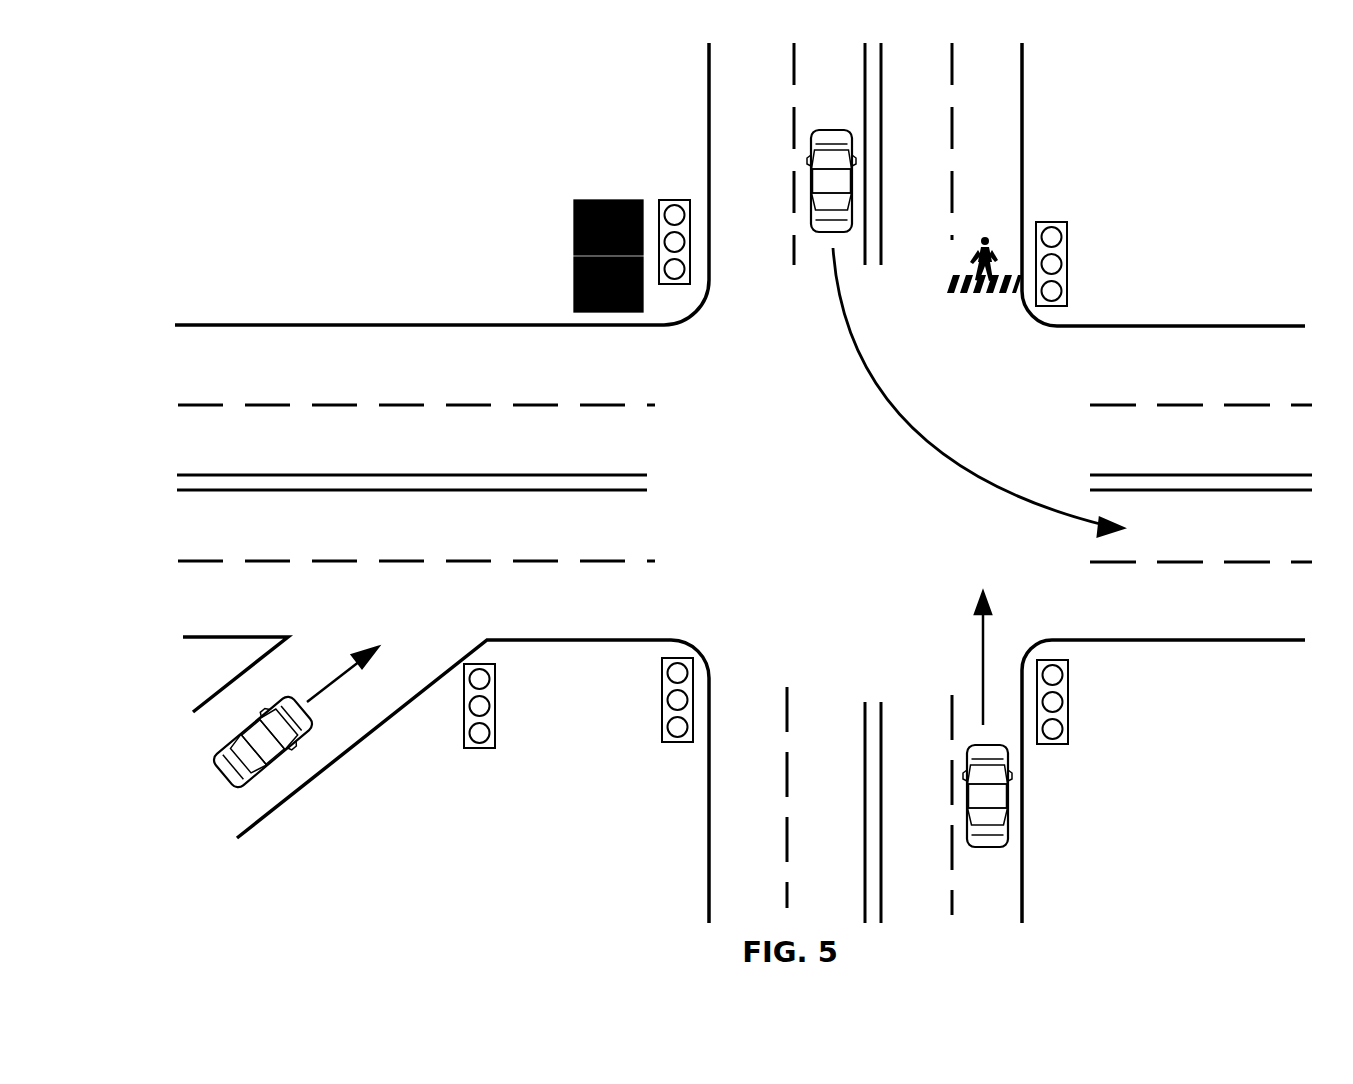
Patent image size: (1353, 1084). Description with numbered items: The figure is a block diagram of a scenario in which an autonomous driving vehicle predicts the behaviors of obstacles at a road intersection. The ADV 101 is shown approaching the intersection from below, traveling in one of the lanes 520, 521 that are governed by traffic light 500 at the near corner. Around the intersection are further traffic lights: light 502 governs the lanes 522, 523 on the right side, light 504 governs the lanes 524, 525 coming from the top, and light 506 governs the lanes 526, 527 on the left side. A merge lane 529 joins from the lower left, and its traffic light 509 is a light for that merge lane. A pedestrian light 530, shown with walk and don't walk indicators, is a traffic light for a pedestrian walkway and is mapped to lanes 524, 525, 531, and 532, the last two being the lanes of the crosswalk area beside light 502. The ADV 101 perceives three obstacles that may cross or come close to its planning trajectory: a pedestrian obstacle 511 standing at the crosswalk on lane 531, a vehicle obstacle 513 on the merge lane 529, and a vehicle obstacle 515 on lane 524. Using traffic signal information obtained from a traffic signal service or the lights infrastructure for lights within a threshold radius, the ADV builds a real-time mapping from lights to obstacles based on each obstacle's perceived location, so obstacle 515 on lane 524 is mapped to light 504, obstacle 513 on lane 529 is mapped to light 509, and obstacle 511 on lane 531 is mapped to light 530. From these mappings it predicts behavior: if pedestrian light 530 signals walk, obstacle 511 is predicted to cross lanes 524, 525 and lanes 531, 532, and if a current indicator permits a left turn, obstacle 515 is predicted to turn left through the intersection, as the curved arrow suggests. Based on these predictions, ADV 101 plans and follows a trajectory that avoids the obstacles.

The ADV 101 is at (1008, 800).
The traffic light 500 is at (1069, 710).
The traffic light 502 is at (1053, 222).
The traffic light 504 is at (677, 200).
The traffic light 506 is at (675, 743).
The traffic light 509 is at (493, 748).
The obstacle 511 is at (982, 295).
The obstacle 513 is at (336, 798).
The obstacle 515 is at (830, 230).
The lane 520 is at (897, 932).
The lane 521 is at (970, 932).
The lane 522 is at (1160, 469).
The lane 523 is at (1160, 396).
The lane 524 is at (815, 99).
The lane 525 is at (737, 99).
The lane 526 is at (470, 552).
The lane 527 is at (470, 626).
The lane 529 is at (162, 844).
The pedestrian light 530 is at (573, 228).
The lane 531 is at (970, 106).
The lane 532 is at (894, 106).